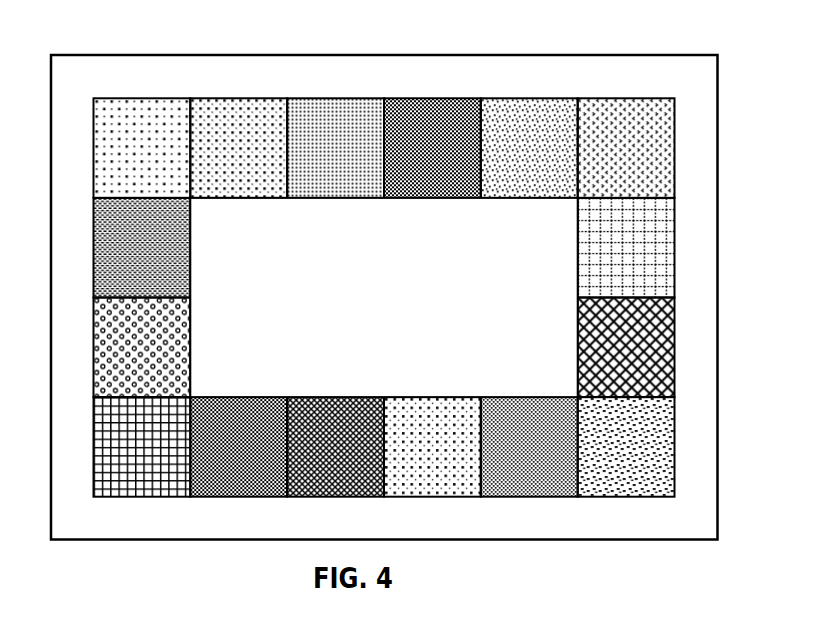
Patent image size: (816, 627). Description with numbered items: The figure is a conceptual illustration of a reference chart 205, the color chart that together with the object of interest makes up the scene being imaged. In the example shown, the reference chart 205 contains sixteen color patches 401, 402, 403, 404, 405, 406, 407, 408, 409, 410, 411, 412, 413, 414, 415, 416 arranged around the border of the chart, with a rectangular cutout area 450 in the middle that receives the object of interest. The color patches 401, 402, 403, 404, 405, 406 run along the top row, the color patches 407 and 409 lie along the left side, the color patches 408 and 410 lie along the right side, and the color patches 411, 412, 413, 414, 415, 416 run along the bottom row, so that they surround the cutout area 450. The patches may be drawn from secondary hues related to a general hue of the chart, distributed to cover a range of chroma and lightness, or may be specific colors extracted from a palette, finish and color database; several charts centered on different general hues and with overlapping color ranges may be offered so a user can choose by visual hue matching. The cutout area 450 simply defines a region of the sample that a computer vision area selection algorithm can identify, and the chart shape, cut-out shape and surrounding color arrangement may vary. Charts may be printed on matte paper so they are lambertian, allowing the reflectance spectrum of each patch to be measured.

The reference chart 205 is at (210, 55).
The color patch 401 is at (163, 159).
The color patch 402 is at (260, 159).
The color patch 403 is at (357, 159).
The color patch 404 is at (411, 159).
The color patch 405 is at (508, 159).
The color patch 406 is at (605, 159).
The color patch 407 is at (163, 258).
The color patch 408 is at (605, 258).
The color patch 409 is at (163, 358).
The color patch 410 is at (605, 358).
The color patch 411 is at (163, 457).
The color patch 412 is at (260, 457).
The color patch 413 is at (357, 457).
The color patch 414 is at (411, 457).
The color patch 415 is at (508, 457).
The color patch 416 is at (605, 457).
The cutout area 450 is at (362, 308).